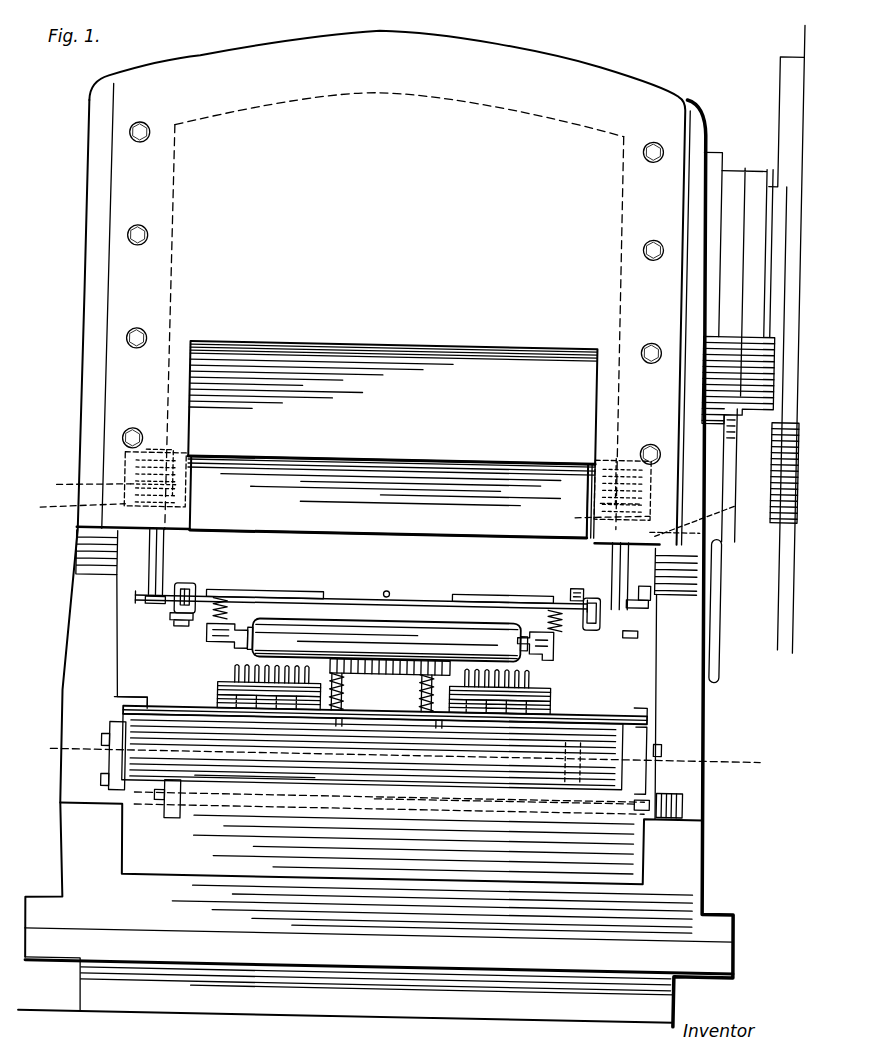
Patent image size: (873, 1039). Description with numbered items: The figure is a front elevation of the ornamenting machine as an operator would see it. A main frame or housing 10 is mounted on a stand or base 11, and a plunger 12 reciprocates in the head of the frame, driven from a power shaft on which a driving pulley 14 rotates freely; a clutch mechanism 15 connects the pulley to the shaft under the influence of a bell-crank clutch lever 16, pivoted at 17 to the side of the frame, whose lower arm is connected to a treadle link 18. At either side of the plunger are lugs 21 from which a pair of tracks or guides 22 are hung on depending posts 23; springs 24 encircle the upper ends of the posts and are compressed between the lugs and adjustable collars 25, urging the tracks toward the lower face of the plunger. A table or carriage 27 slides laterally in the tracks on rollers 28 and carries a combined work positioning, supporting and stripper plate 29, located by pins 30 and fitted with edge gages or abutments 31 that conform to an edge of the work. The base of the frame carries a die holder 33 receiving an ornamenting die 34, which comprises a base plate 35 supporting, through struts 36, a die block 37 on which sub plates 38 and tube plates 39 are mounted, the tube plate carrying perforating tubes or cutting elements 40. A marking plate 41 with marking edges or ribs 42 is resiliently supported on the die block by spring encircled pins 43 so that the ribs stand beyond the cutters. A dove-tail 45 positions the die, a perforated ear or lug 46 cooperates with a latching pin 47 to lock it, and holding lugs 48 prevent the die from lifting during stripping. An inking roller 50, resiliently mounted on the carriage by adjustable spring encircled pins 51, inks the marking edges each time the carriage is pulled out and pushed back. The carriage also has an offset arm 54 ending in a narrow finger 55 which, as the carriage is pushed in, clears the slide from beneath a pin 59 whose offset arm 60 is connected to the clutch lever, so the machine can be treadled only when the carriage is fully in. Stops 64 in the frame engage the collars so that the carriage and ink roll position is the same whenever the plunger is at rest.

The main frame or housing 10 is at (80, 362).
The stand or base 11 is at (95, 978).
The plunger 12 is at (380, 370).
The driving pulley 14 is at (775, 72).
The clutch mechanism 15 is at (740, 170).
The clutch lever 16 is at (730, 460).
The pivot 17 is at (725, 535).
The treadle link 18 is at (724, 660).
The lugs 21 is at (590, 495).
The tracks or guides 22 is at (176, 628).
The struts or posts 23 is at (168, 555).
The springs 24 is at (98, 485).
The collar 25 is at (124, 468).
The table or carriage 27 is at (210, 636).
The rollers 28 is at (197, 590).
The work positioning, supporting and stripper plate 29 is at (372, 600).
The pins 30 is at (390, 595).
The edge gages or abutments 31 is at (300, 594).
The die holder 33 is at (145, 836).
The ornamenting die 34 is at (430, 760).
The base plate 35 is at (330, 780).
The struts 36 is at (390, 761).
The die block 37 is at (127, 716).
The sub plates 38 is at (221, 706).
The tube plates 39 is at (221, 691).
The perforating tubes or cutting elements 40 is at (236, 670).
The marking plate 41 is at (348, 678).
The marking edges or ribs 42 is at (412, 676).
The spring encircled pins 43 is at (345, 721).
The dove-tail 45 is at (420, 760).
The perforated ear or lug 46 is at (176, 824).
The latching pin 47 is at (690, 800).
The holding lugs 48 is at (118, 706).
The inking roller 50 is at (387, 640).
The adjustable spring encircled pins 51 is at (228, 606).
The offset arm 54 is at (572, 590).
The projecting finger 55 is at (650, 600).
The pin 59 is at (652, 590).
The offset arm 60 is at (707, 512).
The stops 64 is at (148, 432).